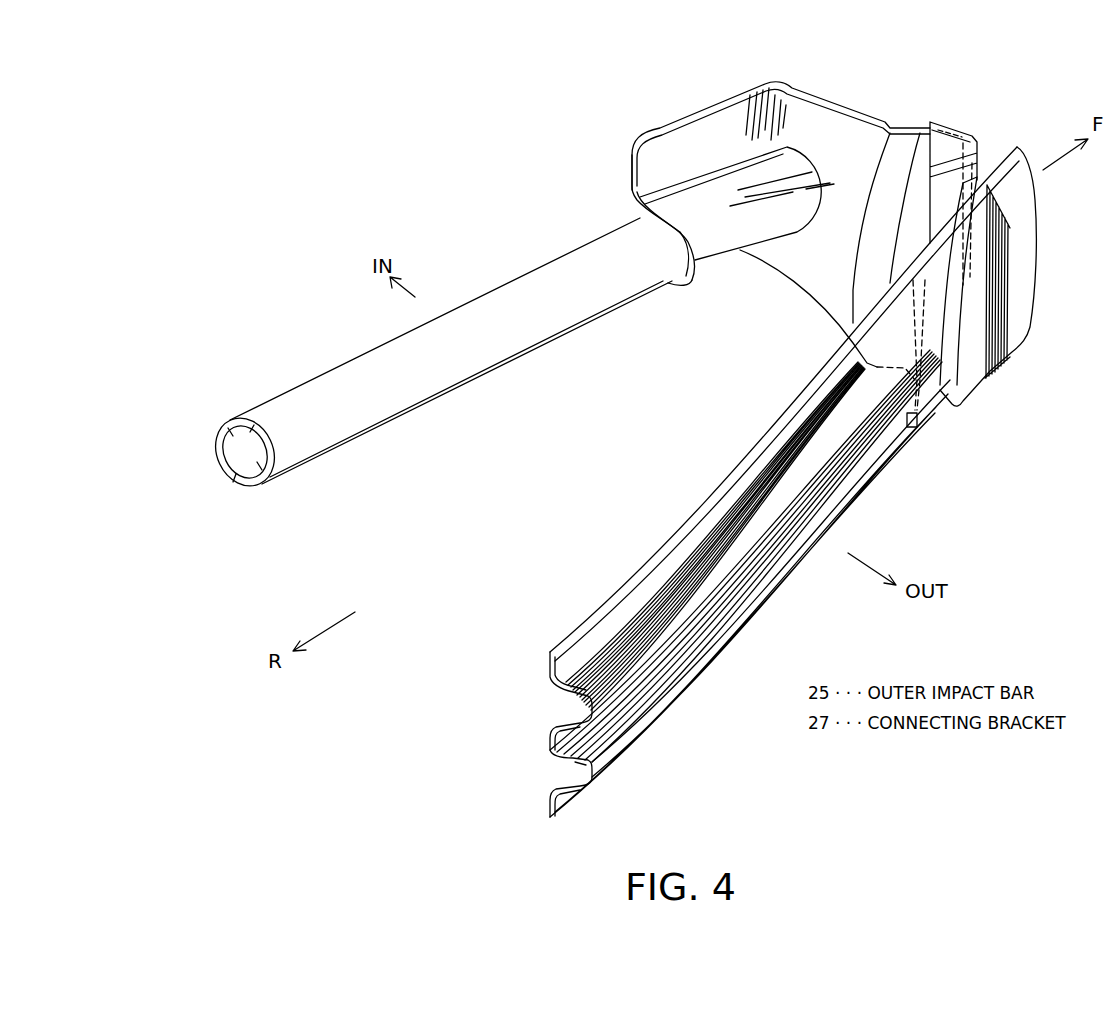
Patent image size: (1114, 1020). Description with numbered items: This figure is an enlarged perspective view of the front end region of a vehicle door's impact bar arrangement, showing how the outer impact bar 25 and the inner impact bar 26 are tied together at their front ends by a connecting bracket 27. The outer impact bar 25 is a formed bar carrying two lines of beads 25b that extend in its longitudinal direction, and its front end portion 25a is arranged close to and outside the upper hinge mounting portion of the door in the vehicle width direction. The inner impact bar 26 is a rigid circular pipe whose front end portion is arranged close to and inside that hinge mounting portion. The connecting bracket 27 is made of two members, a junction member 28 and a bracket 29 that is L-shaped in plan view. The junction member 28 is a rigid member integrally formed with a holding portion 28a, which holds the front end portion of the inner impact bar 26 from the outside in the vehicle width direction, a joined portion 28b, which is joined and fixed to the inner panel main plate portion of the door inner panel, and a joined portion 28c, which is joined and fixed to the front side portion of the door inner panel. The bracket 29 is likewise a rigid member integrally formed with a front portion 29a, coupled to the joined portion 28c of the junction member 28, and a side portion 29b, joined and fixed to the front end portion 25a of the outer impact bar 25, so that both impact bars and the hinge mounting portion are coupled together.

The outer impact bar 25 is at (818, 482).
The front end portion of the outer impact bar 25a is at (953, 323).
The beads 25b is at (595, 755).
The inner impact bar 26 is at (328, 380).
The connecting bracket 27 is at (804, 312).
The junction member 28 is at (761, 191).
The holding portion 28a is at (705, 195).
The joined portion 28b is at (650, 157).
The joined portion 28c is at (877, 140).
The bracket 29 is at (961, 270).
The front portion 29a is at (957, 128).
The side portion 29b is at (915, 412).